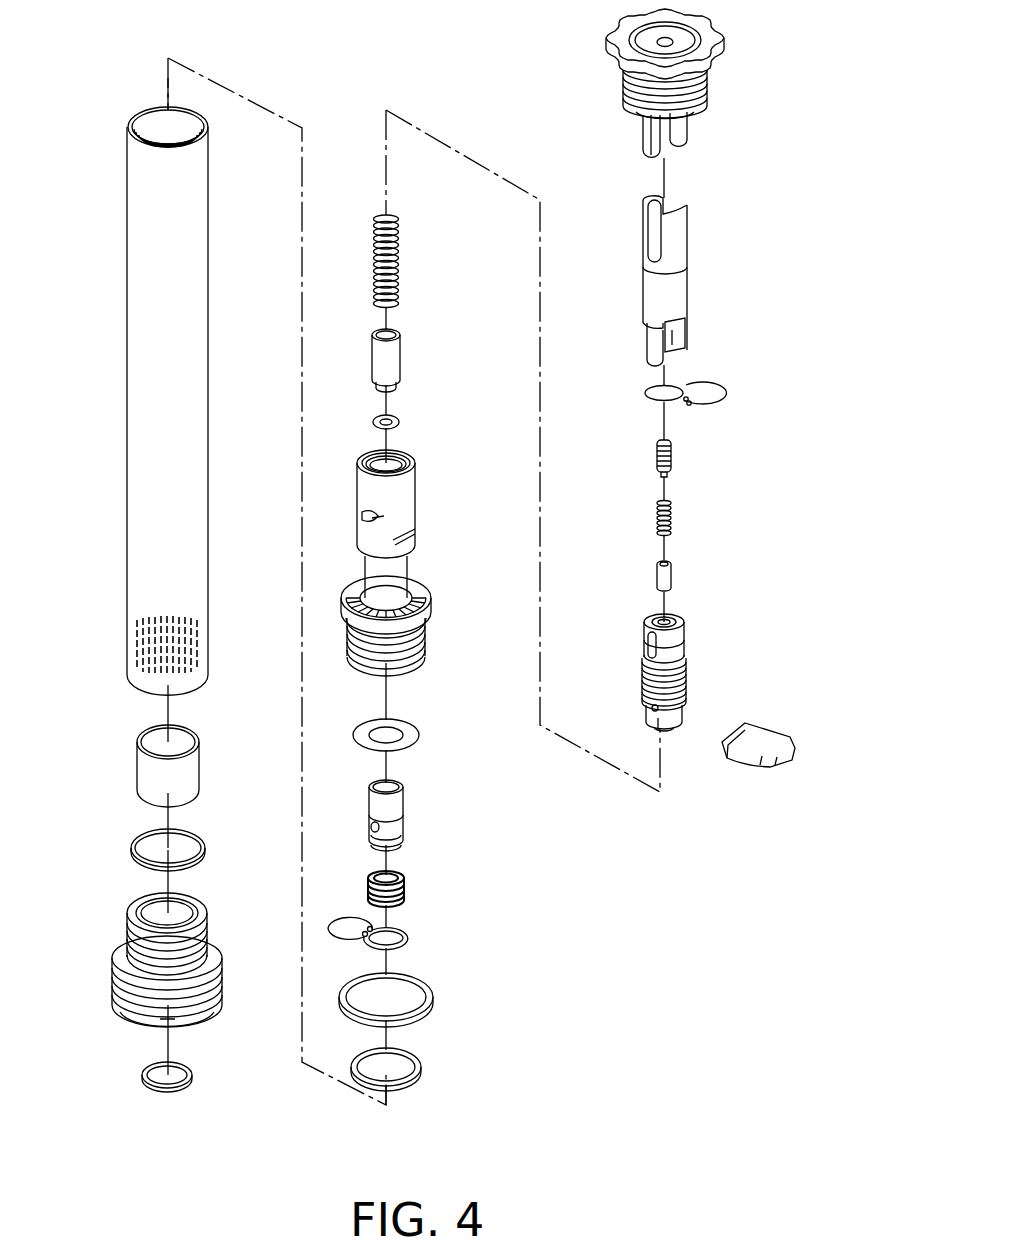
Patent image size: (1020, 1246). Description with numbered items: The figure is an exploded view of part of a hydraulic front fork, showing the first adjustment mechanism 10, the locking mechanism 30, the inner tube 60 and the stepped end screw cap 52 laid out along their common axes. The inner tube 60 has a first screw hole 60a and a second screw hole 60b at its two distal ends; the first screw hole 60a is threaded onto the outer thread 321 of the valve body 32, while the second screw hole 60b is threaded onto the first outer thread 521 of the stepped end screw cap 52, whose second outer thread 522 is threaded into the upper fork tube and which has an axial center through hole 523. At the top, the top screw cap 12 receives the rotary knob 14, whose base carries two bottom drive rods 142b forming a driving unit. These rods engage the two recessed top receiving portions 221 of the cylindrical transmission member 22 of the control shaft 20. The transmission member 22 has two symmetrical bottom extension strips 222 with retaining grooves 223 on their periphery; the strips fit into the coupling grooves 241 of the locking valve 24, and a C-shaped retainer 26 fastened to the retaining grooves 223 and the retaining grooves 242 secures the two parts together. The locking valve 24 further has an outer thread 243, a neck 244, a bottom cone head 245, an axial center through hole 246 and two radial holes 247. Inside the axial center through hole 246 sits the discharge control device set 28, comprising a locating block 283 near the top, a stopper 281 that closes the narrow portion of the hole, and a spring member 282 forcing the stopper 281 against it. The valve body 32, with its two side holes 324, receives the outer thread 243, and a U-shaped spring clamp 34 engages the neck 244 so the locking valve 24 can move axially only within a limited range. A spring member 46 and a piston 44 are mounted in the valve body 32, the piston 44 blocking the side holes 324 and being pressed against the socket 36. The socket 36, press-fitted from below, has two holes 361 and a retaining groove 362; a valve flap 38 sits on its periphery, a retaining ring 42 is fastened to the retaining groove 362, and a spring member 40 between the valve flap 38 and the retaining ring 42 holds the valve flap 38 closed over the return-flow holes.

The first adjustment mechanism 10 is at (513, 92).
The top screw cap 12 is at (725, 78).
The rotary knob 14 is at (735, 27).
The bottom drive rods 142b is at (652, 130).
The control shaft 20 is at (687, 510).
The cylindrical transmission member 22 is at (667, 281).
The recessed top receiving portions 221 is at (650, 228).
The bottom extension strips 222 is at (683, 322).
The retaining grooves 223 is at (648, 340).
The locking valve 24 is at (692, 675).
The coupling grooves 241 is at (650, 625).
The retaining grooves 242 is at (683, 650).
The outer thread 243 is at (647, 668).
The neck 244 is at (686, 700).
The bottom cone head 245 is at (668, 728).
The axial center through hole 246 is at (667, 616).
The radial holes 247 is at (650, 706).
The C-shaped retainer 26 is at (690, 388).
The discharge control device set 28 is at (609, 497).
The stopper 281 is at (625, 549).
The spring member 282 is at (657, 508).
The locating block 283 is at (656, 448).
The locking mechanism 30 is at (423, 645).
The valve body 32 is at (420, 480).
The outer thread 321 is at (427, 640).
The side holes 324 is at (368, 592).
The U-shaped spring clamp 34 is at (790, 738).
The socket 36 is at (402, 803).
The holes 361 is at (370, 826).
The retaining groove 362 is at (431, 824).
The valve flap 38 is at (413, 725).
The spring member 40 is at (406, 890).
The retaining ring 42 is at (410, 940).
The piston 44 is at (374, 365).
The spring member 46 is at (374, 270).
The stepped end screw cap 52 is at (159, 959).
The first outer thread 521 is at (128, 933).
The second outer thread 522 is at (115, 978).
The axial center through hole 523 is at (180, 915).
The inner tube 60 is at (118, 357).
The first screw hole 60a is at (150, 125).
The second screw hole 60b is at (150, 666).